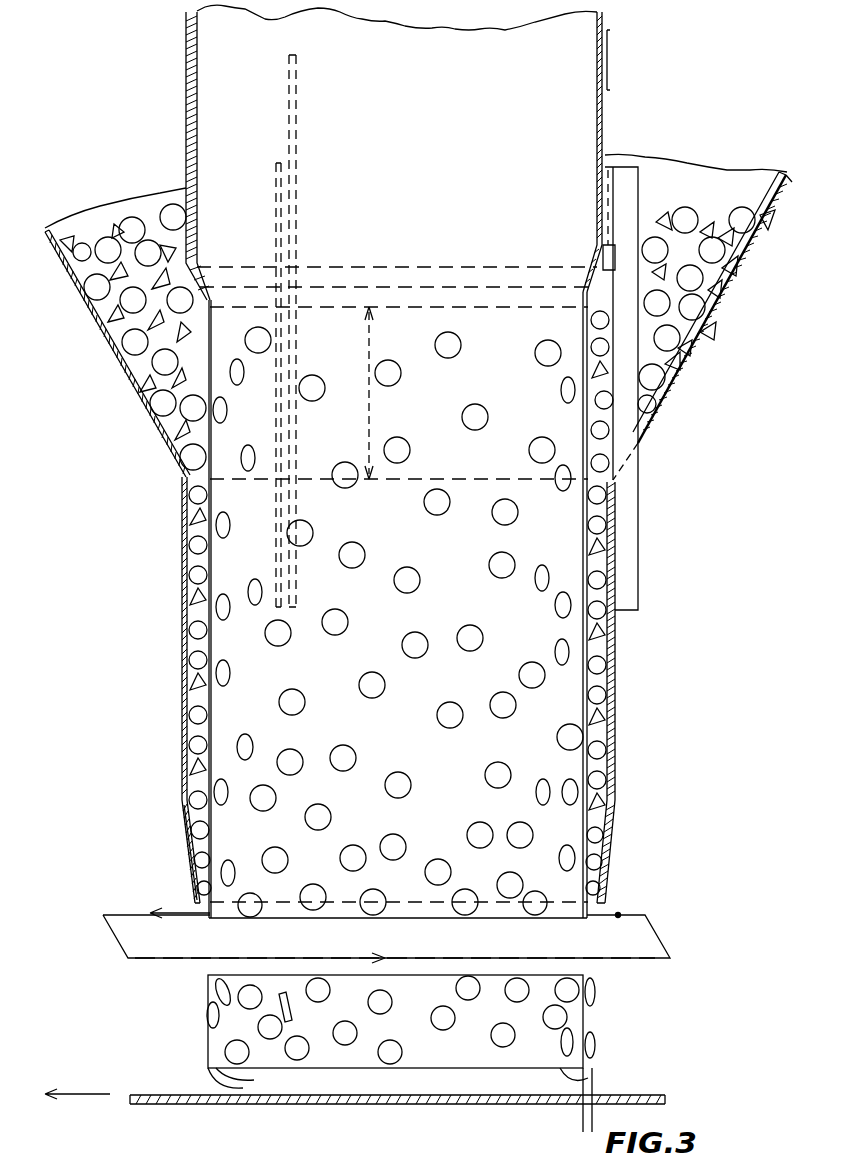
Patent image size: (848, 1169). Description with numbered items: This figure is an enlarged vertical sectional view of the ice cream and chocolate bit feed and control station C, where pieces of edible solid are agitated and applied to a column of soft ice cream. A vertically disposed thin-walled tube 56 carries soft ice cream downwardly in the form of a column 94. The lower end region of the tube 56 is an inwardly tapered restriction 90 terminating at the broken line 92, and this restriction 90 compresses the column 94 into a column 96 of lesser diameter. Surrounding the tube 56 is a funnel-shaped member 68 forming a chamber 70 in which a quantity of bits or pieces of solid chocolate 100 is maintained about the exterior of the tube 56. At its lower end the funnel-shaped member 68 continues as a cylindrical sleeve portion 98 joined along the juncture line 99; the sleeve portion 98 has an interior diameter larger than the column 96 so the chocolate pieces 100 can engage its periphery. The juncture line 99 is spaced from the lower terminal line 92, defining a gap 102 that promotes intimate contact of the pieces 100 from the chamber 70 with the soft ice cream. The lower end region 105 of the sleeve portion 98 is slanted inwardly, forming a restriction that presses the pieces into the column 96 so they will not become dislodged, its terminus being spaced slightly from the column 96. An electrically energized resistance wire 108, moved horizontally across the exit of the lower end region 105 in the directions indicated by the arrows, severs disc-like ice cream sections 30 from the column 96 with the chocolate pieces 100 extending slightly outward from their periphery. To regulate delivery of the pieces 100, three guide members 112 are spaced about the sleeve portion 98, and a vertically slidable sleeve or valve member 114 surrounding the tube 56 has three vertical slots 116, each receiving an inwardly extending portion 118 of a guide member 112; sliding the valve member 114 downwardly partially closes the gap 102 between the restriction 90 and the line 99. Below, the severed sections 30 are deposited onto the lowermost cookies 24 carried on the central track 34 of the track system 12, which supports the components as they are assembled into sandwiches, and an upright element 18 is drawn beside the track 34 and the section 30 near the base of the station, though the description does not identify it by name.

The track system 12 is at (140, 1083).
The support post 18 is at (592, 1080).
The lowermost cookies 24 is at (240, 1093).
The ice cream section 30 is at (545, 978).
The central track 34 is at (635, 1091).
The tube 56 is at (192, 40).
The funnel-shaped member 68 is at (740, 258).
The chamber 70 is at (692, 195).
The inwardly tapered restriction 90 is at (200, 265).
The broken line 92 is at (308, 310).
The column 94 is at (458, 68).
The column of ice cream of lesser diameter 96 is at (210, 560).
The sleeve portion 98 is at (183, 640).
The juncture line 99 is at (325, 478).
The bits or pieces of solid chocolate 100 is at (695, 342).
The gap 102 is at (370, 398).
The lower end region 105 is at (187, 865).
The resistance wire 108 is at (620, 914).
The guide members 112 is at (277, 163).
The sleeve or valve member 114 is at (186, 58).
The vertical slots 116 is at (289, 65).
The inwardly extending portion 118 is at (612, 197).
The ice cream and chocolate bit feed and control station C is at (627, 887).